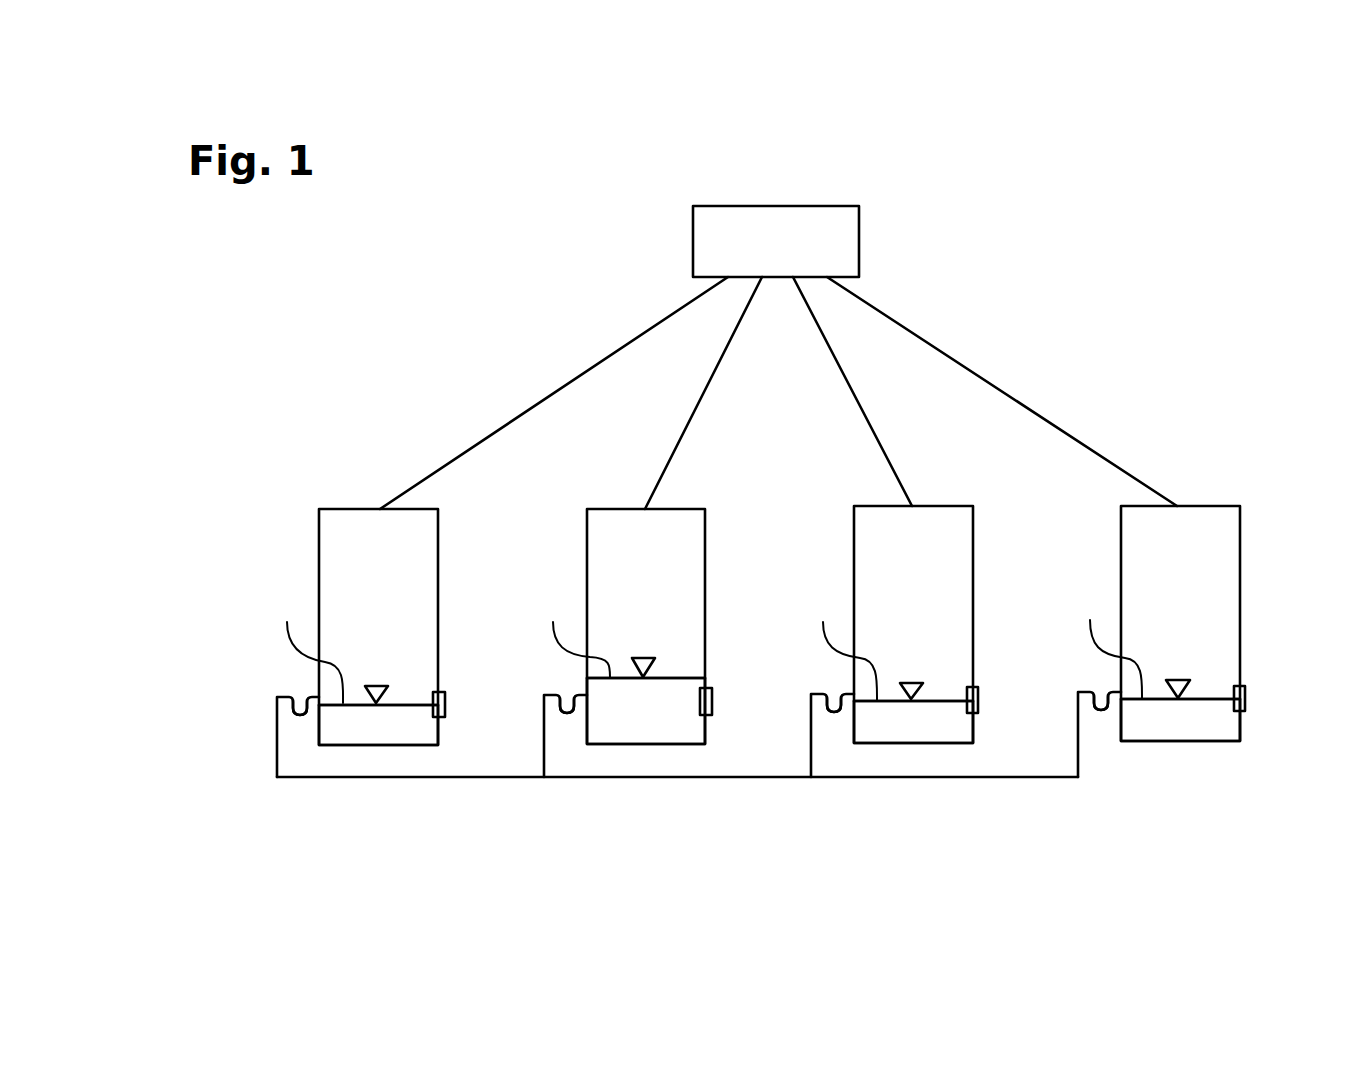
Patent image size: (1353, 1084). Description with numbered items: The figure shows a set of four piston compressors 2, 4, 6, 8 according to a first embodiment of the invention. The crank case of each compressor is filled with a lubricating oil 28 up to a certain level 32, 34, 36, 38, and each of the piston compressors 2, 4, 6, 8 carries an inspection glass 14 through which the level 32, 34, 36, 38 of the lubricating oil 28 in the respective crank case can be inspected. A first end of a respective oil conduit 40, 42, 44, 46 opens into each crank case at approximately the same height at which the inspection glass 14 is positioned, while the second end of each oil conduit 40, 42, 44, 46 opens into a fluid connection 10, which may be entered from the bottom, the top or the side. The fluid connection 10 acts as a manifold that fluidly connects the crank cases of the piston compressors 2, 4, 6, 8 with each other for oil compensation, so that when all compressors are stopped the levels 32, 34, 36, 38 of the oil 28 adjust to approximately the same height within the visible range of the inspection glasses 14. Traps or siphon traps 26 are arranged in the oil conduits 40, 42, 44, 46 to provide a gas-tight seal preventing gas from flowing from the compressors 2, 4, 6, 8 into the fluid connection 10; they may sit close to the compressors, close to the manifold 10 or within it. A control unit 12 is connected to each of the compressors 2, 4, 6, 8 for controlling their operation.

The piston compressor 2 is at (344, 509).
The piston compressor 4 is at (620, 509).
The piston compressor 6 is at (935, 506).
The piston compressor 8 is at (1200, 506).
The fluid connection 10 is at (722, 777).
The control unit 12 is at (774, 206).
The inspection glass 14 is at (447, 705).
The trap/siphon trap 26 is at (298, 717).
The lubricating oil 28 is at (400, 727).
The level 32 is at (310, 648).
The level 34 is at (574, 635).
The level 36 is at (843, 646).
The level 38 is at (1108, 645).
The oil conduit 40 is at (277, 732).
The oil conduit 42 is at (544, 737).
The oil conduit 44 is at (811, 737).
The oil conduit 46 is at (1078, 733).